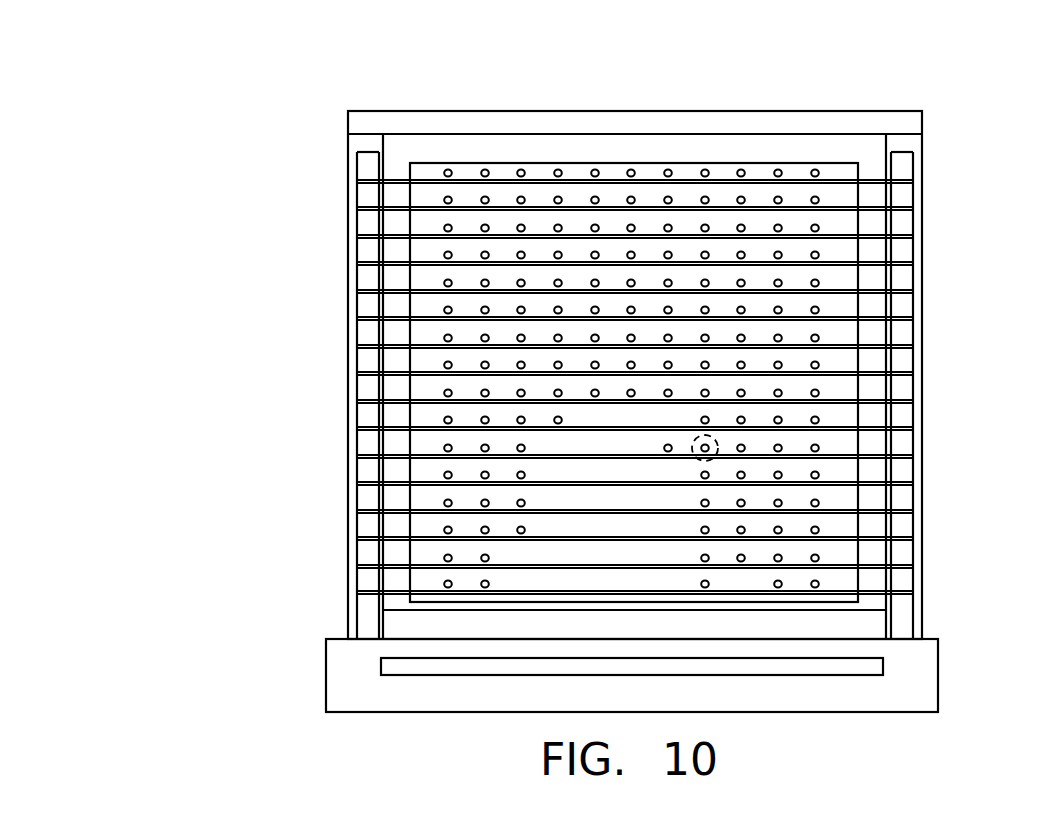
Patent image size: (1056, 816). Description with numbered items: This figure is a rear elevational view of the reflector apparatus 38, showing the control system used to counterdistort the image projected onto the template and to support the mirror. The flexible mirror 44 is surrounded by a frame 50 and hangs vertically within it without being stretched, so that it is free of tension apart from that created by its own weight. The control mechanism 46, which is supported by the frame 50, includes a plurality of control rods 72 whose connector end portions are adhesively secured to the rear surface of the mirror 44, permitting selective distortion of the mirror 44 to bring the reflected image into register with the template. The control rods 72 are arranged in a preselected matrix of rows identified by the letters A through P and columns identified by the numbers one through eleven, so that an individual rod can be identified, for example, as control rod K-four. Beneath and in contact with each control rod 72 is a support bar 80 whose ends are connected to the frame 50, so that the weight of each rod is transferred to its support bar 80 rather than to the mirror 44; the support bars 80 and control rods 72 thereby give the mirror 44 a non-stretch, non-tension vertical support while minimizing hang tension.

The reflector apparatus 38 is at (318, 103).
The flexible mirror 44 is at (412, 162).
The control mechanism 46 is at (870, 150).
The frame 50 is at (348, 136).
The control rods 72 is at (633, 172).
The support bars 80 is at (422, 262).